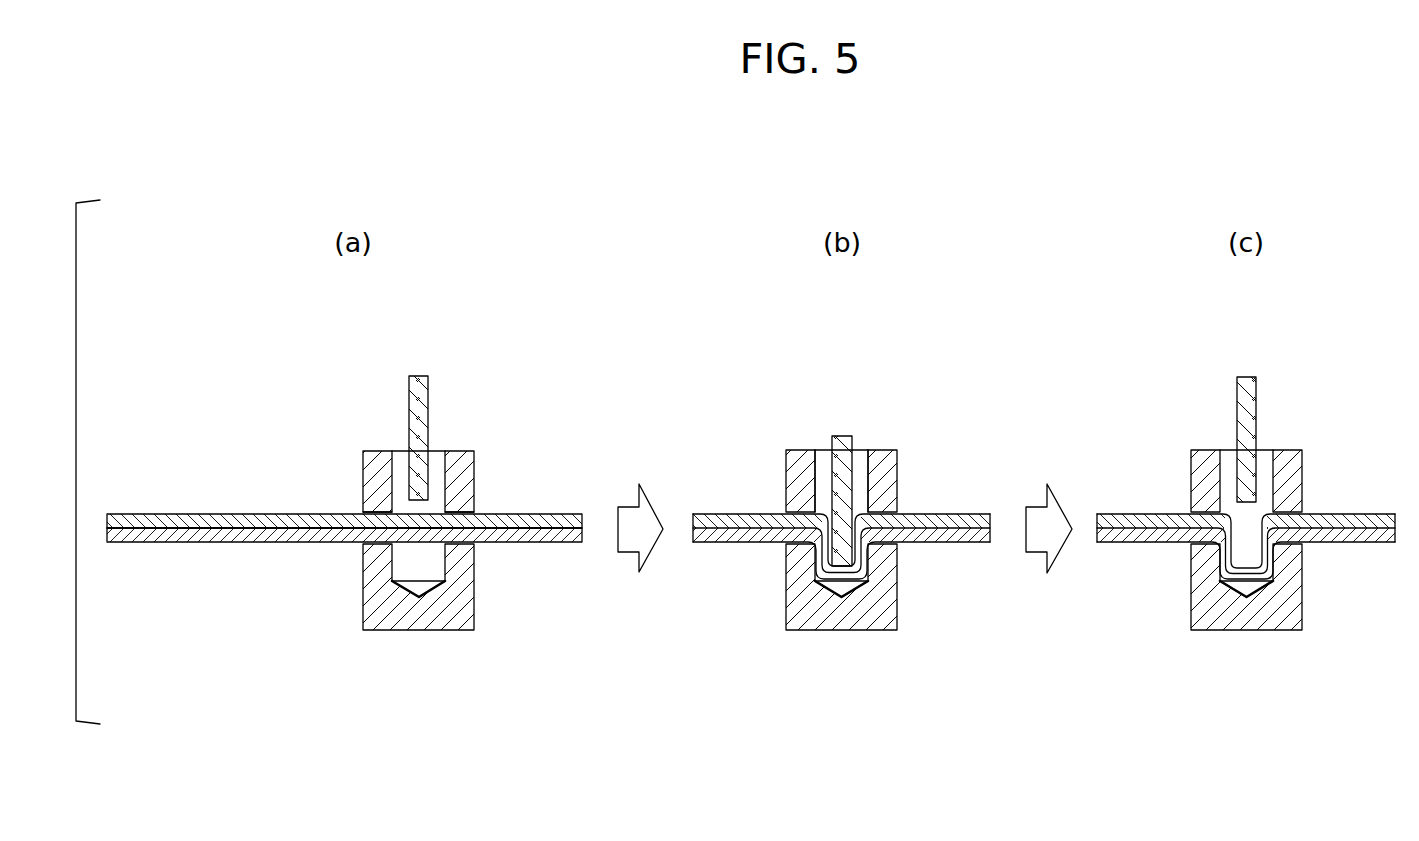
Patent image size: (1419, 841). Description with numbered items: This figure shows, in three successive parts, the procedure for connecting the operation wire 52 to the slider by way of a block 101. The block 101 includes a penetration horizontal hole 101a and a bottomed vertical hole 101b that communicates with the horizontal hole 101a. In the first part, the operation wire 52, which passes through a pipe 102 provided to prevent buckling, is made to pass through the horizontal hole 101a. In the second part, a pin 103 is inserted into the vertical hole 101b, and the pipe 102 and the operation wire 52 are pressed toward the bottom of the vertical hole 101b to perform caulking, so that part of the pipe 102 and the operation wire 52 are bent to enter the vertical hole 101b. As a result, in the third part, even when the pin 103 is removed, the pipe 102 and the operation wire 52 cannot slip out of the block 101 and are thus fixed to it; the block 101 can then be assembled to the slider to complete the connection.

The block 101 is at (484, 447).
The horizontal hole 101a is at (478, 522).
The vertical hole 101b is at (446, 562).
The pipe 102 is at (230, 514).
The operation wire 52 is at (170, 530).
The pin 103 is at (416, 376).